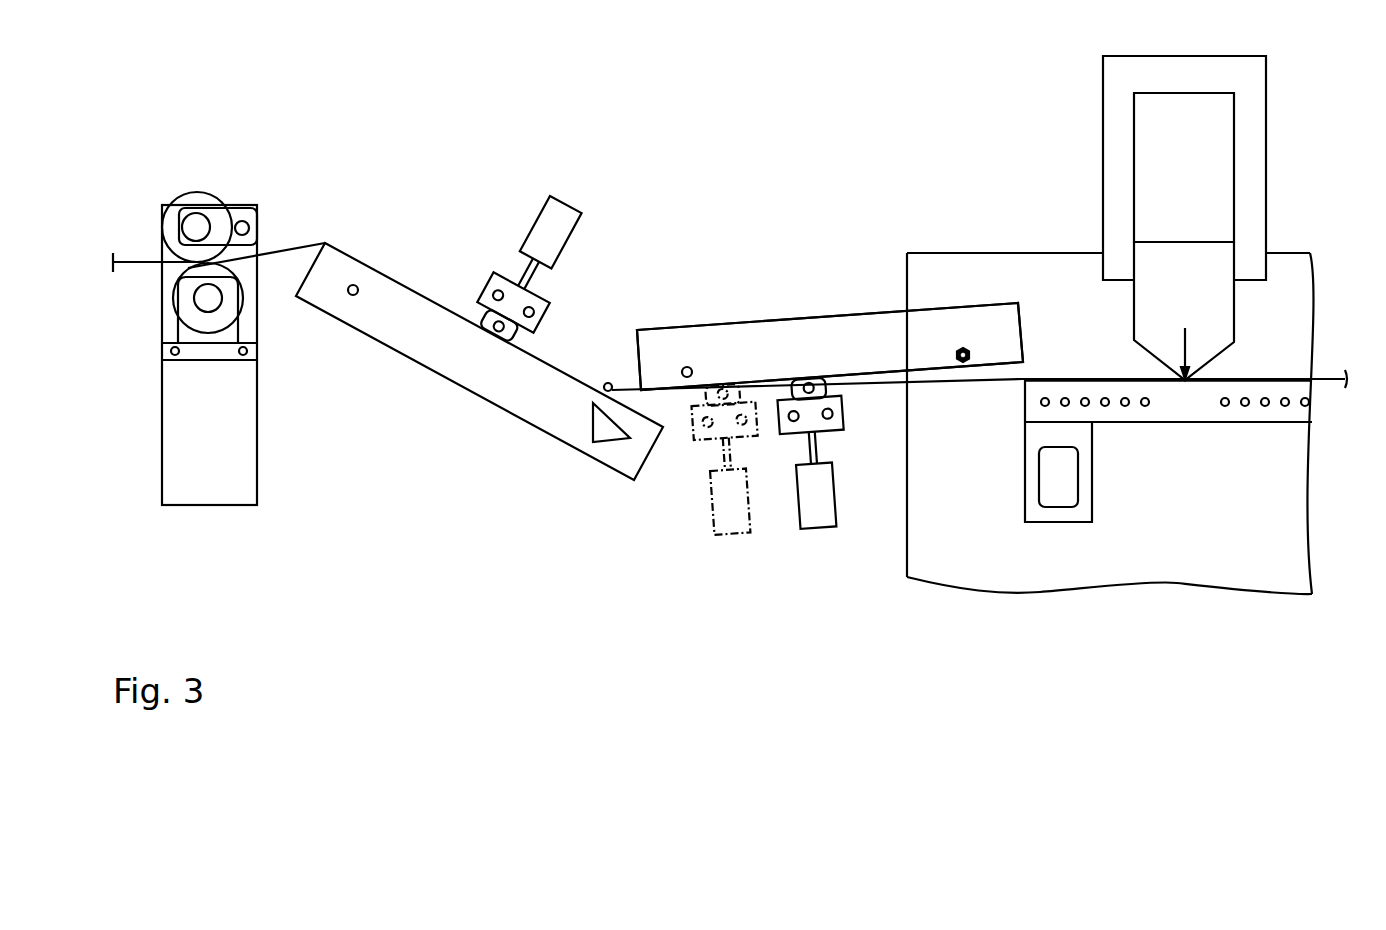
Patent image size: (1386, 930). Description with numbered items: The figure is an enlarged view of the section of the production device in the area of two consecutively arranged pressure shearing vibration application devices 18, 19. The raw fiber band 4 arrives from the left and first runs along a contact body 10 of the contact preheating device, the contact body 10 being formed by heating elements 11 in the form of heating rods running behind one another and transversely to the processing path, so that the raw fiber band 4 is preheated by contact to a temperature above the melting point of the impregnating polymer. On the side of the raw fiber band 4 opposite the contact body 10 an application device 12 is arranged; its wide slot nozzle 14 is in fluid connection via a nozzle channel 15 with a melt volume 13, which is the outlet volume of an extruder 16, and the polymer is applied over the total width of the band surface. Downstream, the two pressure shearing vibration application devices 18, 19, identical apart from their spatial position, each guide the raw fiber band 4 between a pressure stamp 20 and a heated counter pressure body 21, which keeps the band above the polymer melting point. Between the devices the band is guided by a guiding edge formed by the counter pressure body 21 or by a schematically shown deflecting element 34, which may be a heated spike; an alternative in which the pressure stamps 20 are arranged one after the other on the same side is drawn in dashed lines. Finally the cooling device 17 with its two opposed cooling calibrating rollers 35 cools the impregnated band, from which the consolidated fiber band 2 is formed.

The fiber band 2 is at (140, 259).
The raw fiber band 4 is at (281, 247).
The contact body 10 is at (1167, 413).
The heating elements 11 is at (1285, 408).
The application device 12 is at (1121, 109).
The melt volume 13 is at (1148, 133).
The wide slot nozzle 14 is at (1202, 252).
The nozzle channel 15 is at (1187, 343).
The extruder 16 is at (1088, 573).
The cooling device 17 is at (268, 445).
The pressure shearing vibration application device 18 is at (728, 298).
The pressure shearing vibration application device 19 is at (479, 217).
The pressure stamp 20 is at (649, 354).
The counter pressure body 21 is at (410, 323).
The deflecting element 34 is at (610, 383).
The cooling calibrating rollers 35 is at (206, 198).